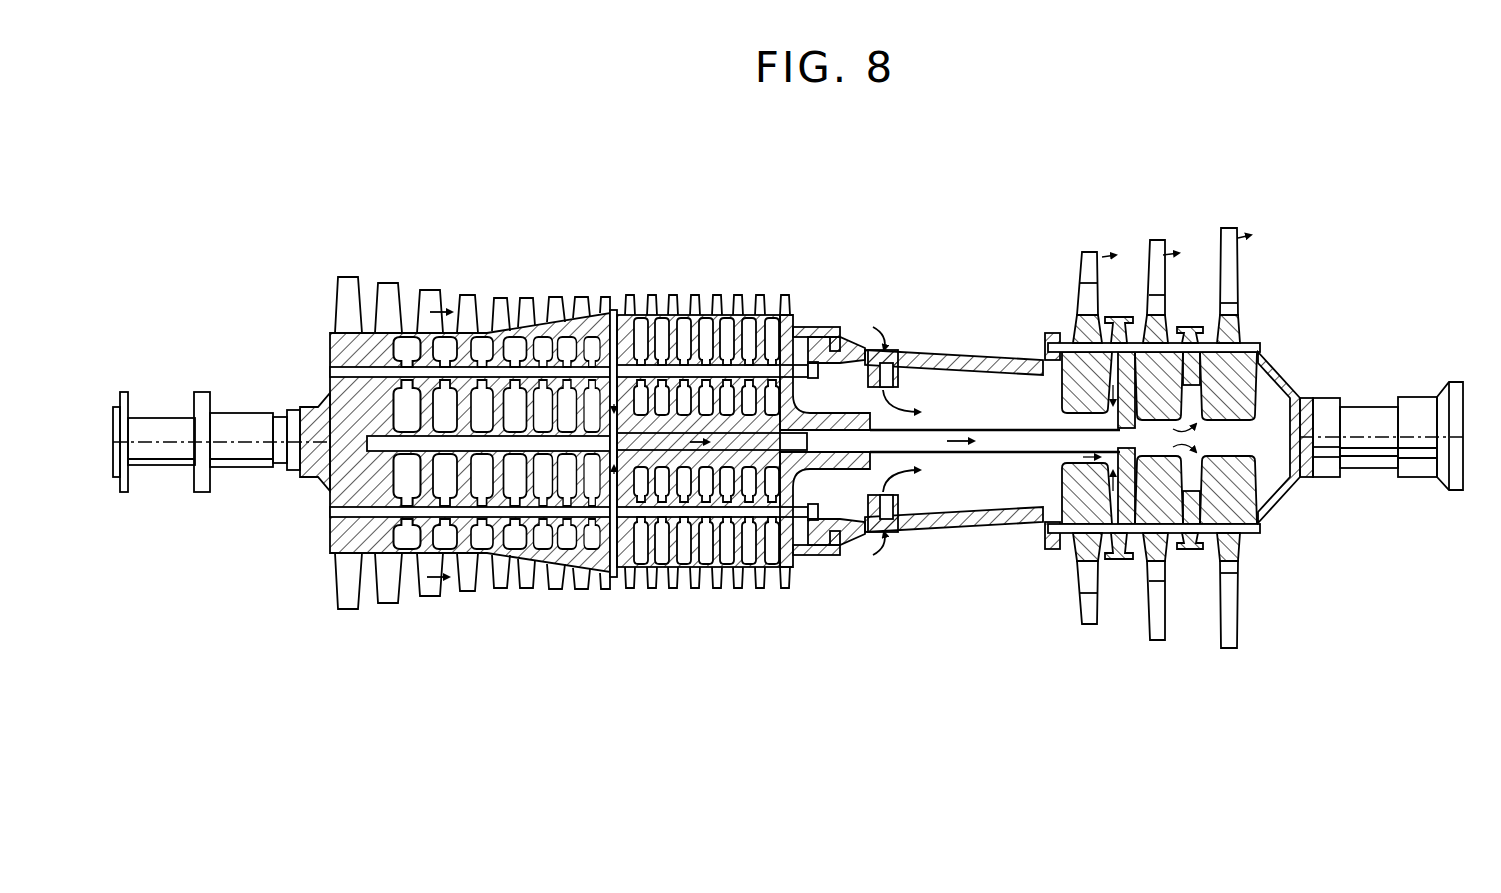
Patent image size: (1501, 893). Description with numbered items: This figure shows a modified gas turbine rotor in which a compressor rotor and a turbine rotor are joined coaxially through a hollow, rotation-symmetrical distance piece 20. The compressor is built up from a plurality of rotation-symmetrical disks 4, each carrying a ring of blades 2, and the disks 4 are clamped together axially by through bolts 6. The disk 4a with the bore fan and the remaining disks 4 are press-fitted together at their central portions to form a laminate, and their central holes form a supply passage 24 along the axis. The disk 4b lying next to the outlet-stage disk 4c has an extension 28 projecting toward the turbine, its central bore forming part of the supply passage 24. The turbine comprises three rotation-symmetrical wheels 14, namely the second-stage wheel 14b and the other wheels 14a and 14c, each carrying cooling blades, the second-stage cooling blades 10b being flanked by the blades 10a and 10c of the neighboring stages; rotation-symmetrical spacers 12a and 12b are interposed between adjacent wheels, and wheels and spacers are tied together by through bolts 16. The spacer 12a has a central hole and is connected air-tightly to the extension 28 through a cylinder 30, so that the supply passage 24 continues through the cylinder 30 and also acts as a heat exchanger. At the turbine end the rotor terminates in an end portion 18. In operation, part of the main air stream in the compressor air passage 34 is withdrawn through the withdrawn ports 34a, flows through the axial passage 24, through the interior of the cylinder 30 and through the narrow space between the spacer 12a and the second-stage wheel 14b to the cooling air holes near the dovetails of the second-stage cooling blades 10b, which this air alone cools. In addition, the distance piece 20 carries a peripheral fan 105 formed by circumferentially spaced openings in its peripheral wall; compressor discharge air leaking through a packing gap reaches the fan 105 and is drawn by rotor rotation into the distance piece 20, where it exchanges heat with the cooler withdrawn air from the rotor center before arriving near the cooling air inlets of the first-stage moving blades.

The blades 2 is at (388, 292).
The rotation-symmetrical disks 4 is at (397, 328).
The through bolts 6 is at (332, 347).
The air passage 34 is at (483, 317).
The withdrawn ports 34a is at (615, 310).
The compressor disk with the bore fan 4a is at (628, 318).
The disk adjacent to the outlet-stage disk 4b is at (757, 295).
The outlet-stage disk 4c is at (795, 318).
The supply passage 24 is at (657, 430).
The extension 28 is at (835, 400).
The distance piece 20 is at (927, 353).
The cylinder 30 is at (977, 428).
The peripheral fan 105 is at (903, 530).
The rotation-symmetrical wheels 14 is at (1072, 556).
The first rotor disk 14a is at (1068, 341).
The second-stage wheel 14b is at (1182, 330).
The third rotor disk 14c is at (1253, 342).
The through bolts 16 is at (1258, 346).
The hub cone 18 is at (1327, 398).
The first stage rotor blade 10a is at (1090, 300).
The second-stage cooling blades 10b is at (1157, 243).
The third stage rotor blade 10c is at (1230, 228).
The spacer 12a is at (1120, 317).
The second stator vane 12b is at (1195, 328).